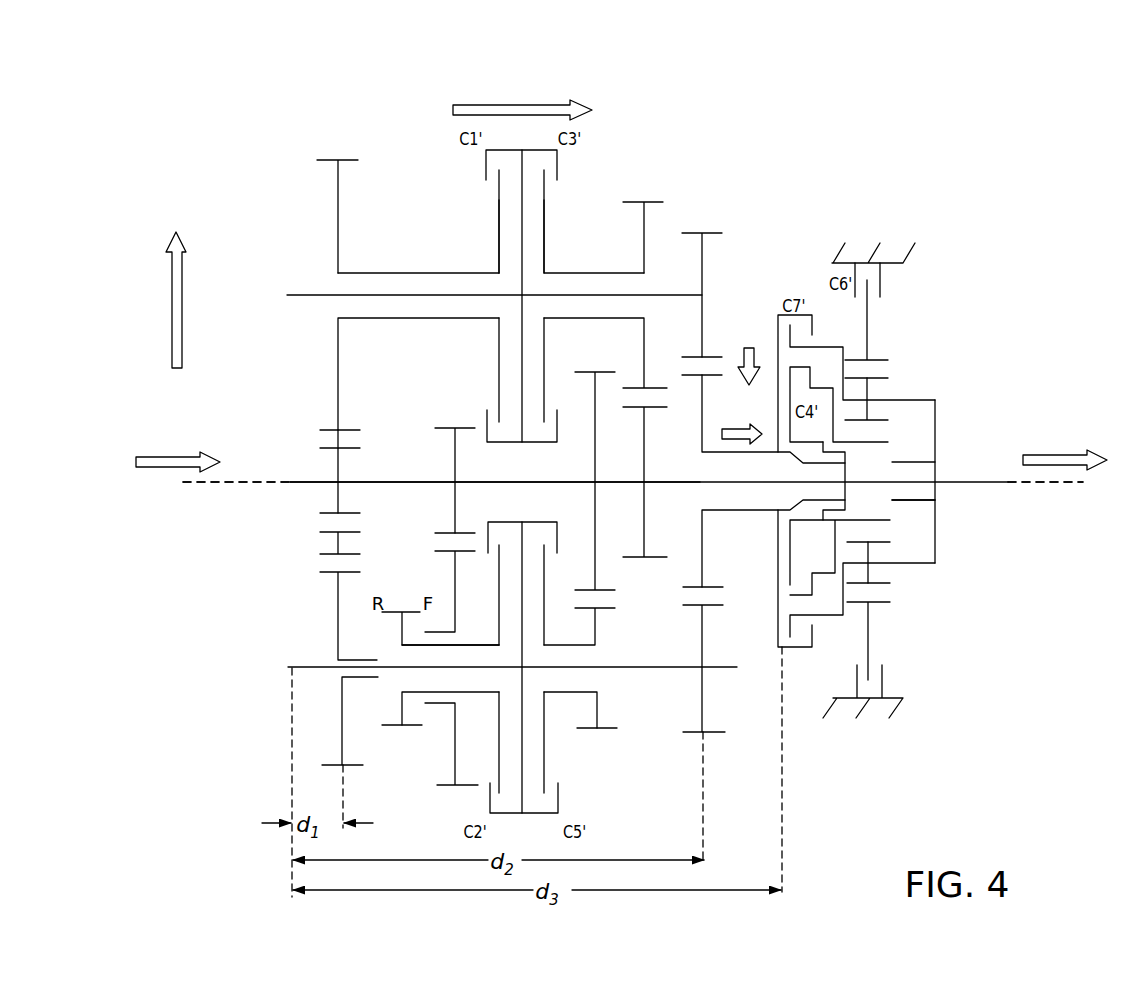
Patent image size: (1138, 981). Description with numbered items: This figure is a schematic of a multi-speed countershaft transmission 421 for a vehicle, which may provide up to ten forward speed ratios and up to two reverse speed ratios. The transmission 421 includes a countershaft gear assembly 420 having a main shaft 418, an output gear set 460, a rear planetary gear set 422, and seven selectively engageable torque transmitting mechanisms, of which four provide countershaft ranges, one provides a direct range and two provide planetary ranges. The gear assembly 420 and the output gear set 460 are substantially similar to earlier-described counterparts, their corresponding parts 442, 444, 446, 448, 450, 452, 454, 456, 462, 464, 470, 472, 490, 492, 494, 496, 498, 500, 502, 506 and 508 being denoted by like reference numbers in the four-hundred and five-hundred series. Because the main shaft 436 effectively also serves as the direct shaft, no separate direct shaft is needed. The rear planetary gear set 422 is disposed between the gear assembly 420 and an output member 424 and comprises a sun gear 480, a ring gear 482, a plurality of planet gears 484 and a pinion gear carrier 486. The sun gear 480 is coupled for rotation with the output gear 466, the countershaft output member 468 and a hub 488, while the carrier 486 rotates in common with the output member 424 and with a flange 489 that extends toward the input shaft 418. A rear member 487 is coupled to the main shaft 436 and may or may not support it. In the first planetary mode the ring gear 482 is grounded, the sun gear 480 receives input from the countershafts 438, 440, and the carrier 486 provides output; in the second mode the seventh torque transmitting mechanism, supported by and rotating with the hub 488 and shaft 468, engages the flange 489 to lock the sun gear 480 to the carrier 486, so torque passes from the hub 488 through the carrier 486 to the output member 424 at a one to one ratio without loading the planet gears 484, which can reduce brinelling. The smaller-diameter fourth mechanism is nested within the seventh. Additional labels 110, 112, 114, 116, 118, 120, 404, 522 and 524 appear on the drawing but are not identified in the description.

The input direction arrow 110 is at (168, 455).
The direction arrow 112 is at (171, 319).
The direction arrow 114 is at (512, 101).
The direction arrow 116 is at (758, 346).
The direction arrow 118 is at (742, 445).
The output direction arrow 120 is at (1056, 454).
The transmission housing 404 is at (902, 262).
The main shaft 418 is at (293, 481).
The countershaft gear assembly 420 is at (377, 128).
The countershaft transmission 421 is at (1028, 139).
The rear planetary gear set 422 is at (886, 206).
The output member 424 is at (977, 481).
The main shaft 436 is at (530, 481).
The countershaft 438 is at (300, 667).
The countershaft 440 is at (311, 295).
The input gear 442 is at (340, 470).
The first gear 444 is at (454, 440).
The second gear 446 is at (594, 453).
The third gear 448 is at (645, 467).
The fourth gear 450 is at (342, 729).
The fifth gear 452 is at (401, 711).
The sixth gear 454 is at (454, 562).
The seventh gear 456 is at (599, 712).
The output gear set 460 is at (721, 207).
The eighth gear 462 is at (705, 634).
The ninth gear 464 is at (703, 258).
The output gear 466 is at (703, 392).
The countershaft output member 468 is at (740, 513).
The gear 470 is at (341, 218).
The gear 472 is at (643, 218).
The sun gear 480 is at (888, 440).
The ring gear 482 is at (878, 357).
The planet gears 484 is at (876, 370).
The pinion gear carrier 486 is at (872, 390).
The rear member 487 is at (916, 502).
The hub 488 is at (777, 322).
The flange 489 is at (829, 346).
The gear 490 is at (447, 706).
The synchronizer hub 492 is at (485, 647).
The synchronizer sleeve 494 is at (580, 646).
The clutch drum 496 is at (418, 273).
The clutch drum 498 is at (574, 273).
The reverse/forward synchronizer 500 is at (348, 660).
The idler gear 502 is at (322, 546).
The gear group 506 is at (319, 374).
The ring gear member 508 is at (698, 470).
The input axis 522 is at (207, 484).
The output axis 524 is at (1050, 485).